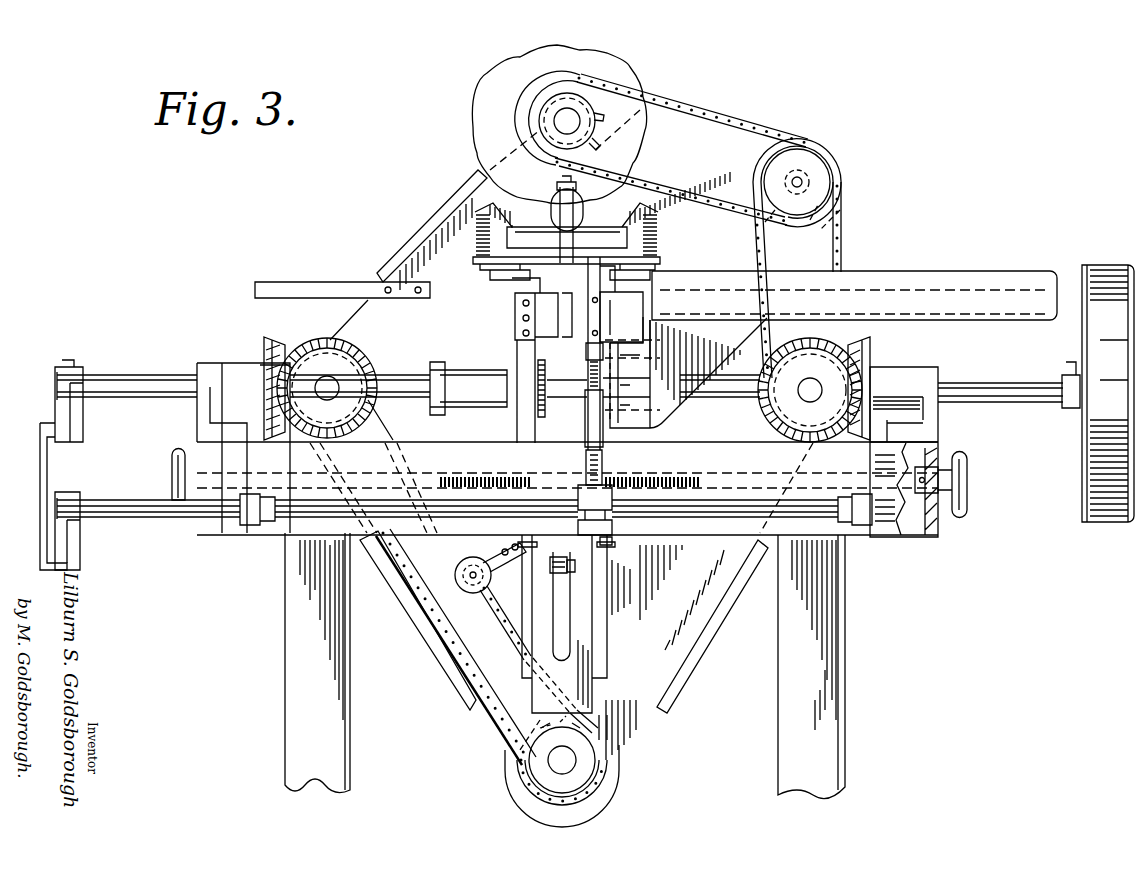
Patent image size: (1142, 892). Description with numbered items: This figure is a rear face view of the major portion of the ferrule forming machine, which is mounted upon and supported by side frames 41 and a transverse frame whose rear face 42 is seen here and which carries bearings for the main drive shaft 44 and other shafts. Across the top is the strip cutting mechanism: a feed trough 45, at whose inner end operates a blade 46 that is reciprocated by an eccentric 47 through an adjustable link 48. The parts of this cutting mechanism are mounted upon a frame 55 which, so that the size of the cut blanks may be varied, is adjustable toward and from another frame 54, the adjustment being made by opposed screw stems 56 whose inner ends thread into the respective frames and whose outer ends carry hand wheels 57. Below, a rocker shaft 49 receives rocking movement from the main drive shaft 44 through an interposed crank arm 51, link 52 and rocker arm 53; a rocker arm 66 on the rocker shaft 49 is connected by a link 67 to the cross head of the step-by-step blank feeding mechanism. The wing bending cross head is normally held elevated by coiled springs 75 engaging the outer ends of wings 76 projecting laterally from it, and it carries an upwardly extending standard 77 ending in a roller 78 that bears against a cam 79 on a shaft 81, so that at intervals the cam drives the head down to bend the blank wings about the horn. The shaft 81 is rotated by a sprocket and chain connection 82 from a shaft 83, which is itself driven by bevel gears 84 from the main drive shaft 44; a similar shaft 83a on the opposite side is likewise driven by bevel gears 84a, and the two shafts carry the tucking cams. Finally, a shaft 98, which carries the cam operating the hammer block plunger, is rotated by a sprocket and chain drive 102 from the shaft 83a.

The side frames 41 is at (565, 666).
The rear face of transverse frame 42 is at (567, 465).
The main drive shaft 44 is at (1008, 368).
The feed trough 45 is at (940, 268).
The blade 46 is at (603, 280).
The eccentric 47 is at (580, 487).
The adjustable link 48 is at (598, 422).
The rocker shaft 49 is at (763, 465).
The crank arm 51 is at (92, 424).
The link 52 is at (40, 468).
The rocker arm 53 is at (88, 545).
The frame 54 is at (500, 421).
The frame 55 is at (686, 372).
The screw stems 56 is at (710, 480).
The hand wheels 57 is at (968, 473).
The rocker arm 66 is at (545, 550).
The link 67 is at (576, 565).
The coiled springs 75 is at (658, 245).
The wings 76 is at (500, 277).
The standard 77 is at (552, 226).
The roller 78 is at (585, 212).
The cam 79 is at (559, 124).
The shaft 81 is at (565, 131).
The sprocket and chain connection 82 is at (840, 247).
The shaft 83 is at (810, 390).
The shaft 83a is at (327, 388).
The bevel gears 84 is at (870, 345).
The bevel gears 84a is at (298, 338).
The shaft 98 is at (562, 771).
The sprocket and chain drive 102 is at (435, 645).